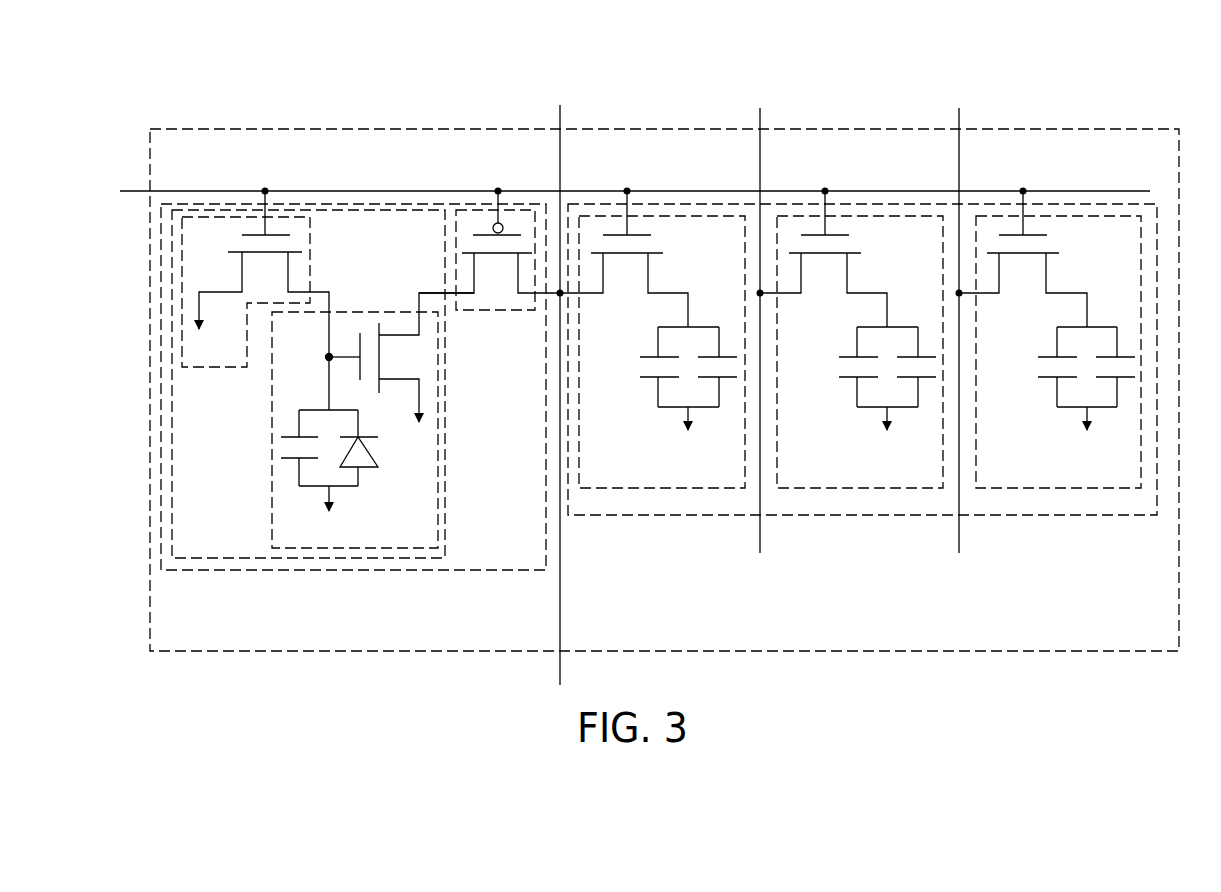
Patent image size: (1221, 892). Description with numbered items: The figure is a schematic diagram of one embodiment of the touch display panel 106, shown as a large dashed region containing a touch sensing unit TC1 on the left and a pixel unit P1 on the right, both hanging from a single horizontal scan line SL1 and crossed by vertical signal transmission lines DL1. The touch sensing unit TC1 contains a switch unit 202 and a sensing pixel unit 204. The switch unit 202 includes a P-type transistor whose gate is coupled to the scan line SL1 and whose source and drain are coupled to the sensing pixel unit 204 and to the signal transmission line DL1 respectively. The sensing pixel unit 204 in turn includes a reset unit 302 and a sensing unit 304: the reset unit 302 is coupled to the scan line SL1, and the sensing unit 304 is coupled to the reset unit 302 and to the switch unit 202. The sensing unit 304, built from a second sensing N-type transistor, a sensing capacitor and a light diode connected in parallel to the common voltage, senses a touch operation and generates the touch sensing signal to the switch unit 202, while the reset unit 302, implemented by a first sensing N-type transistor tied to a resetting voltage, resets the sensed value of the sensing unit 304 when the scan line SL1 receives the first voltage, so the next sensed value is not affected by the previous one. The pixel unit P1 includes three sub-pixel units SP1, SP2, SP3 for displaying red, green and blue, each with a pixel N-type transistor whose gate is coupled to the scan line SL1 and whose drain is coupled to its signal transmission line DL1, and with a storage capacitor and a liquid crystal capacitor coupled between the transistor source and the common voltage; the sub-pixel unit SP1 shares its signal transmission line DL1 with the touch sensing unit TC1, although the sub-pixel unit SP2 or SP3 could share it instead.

The touch display panel 106 is at (1120, 129).
The reset unit 302 is at (314, 257).
The sensing unit 304 is at (268, 422).
The switch unit 202 is at (493, 310).
The sensing pixel unit 204 is at (445, 473).
The scan line SL1 is at (130, 190).
The signal transmission line DL1 is at (560, 113).
The touch sensing unit TC1 is at (230, 570).
The pixel unit P1 is at (637, 515).
The sub-pixel unit SP1 is at (688, 488).
The sub-pixel unit SP2 is at (887, 488).
The sub-pixel unit SP3 is at (1085, 488).